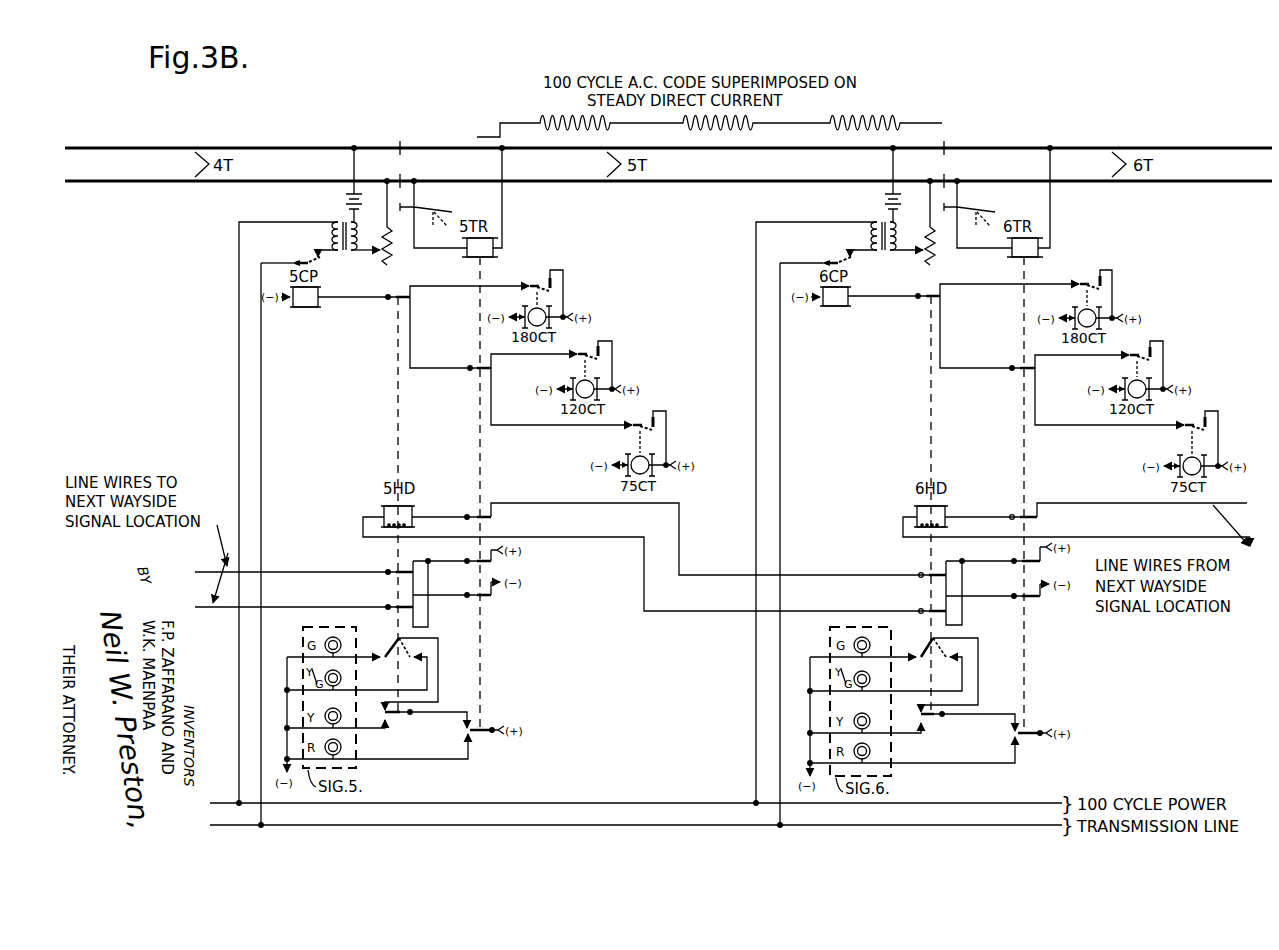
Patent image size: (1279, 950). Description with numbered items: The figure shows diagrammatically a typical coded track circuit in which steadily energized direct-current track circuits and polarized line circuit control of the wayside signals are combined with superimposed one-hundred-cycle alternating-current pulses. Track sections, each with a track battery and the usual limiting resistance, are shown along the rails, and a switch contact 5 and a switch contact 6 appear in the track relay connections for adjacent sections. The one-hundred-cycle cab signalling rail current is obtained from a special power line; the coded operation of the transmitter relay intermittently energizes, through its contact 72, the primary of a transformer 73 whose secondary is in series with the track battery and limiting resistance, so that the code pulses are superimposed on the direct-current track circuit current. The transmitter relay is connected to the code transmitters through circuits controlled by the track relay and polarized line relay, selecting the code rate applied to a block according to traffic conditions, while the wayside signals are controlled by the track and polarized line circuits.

The track switch contact 5 is at (425, 209).
The track switch contact 6 is at (968, 209).
The contact 72 is at (308, 261).
The transformer 73 is at (345, 252).